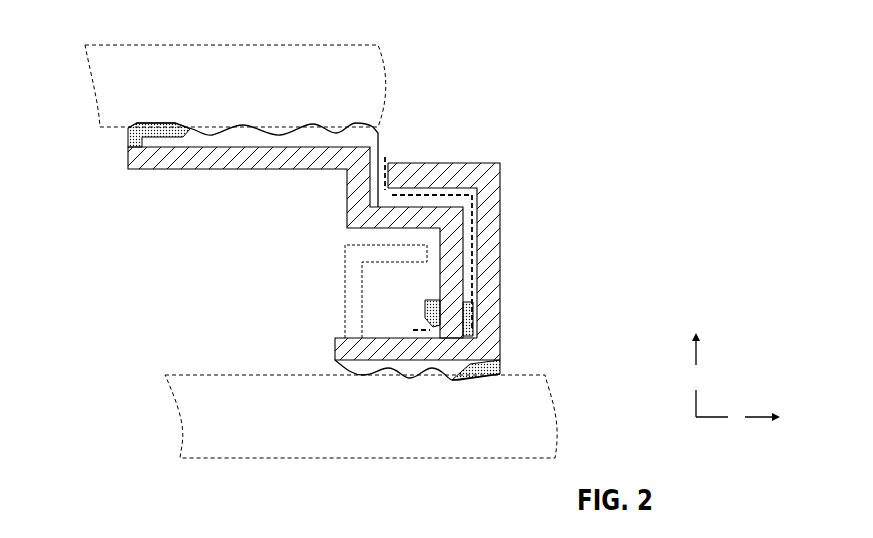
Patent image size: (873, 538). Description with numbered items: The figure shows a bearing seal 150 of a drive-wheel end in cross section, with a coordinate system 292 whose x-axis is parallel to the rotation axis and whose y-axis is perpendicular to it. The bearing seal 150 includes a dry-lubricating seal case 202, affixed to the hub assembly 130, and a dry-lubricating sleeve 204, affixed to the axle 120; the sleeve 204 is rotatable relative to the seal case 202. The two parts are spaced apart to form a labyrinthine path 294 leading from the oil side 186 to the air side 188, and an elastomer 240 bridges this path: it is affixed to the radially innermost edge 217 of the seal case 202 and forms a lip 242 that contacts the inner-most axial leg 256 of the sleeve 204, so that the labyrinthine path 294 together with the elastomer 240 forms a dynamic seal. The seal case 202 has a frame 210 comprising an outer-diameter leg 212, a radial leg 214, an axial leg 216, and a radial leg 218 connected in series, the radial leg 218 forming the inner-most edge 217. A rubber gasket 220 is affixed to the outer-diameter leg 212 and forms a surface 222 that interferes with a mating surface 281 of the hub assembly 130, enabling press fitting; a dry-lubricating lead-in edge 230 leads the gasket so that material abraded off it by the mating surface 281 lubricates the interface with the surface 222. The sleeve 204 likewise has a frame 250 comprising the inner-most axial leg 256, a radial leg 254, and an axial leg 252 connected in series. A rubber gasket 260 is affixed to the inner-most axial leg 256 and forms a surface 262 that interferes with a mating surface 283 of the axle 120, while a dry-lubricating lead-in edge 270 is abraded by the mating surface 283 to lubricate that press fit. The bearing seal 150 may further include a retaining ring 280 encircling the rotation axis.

The axle 120 is at (554, 448).
The hub assembly 130 is at (125, 78).
The bearing seal 150 is at (598, 101).
The oil side 186 is at (260, 301).
The air side 188 is at (620, 295).
The seal case 202 is at (102, 157).
The sleeve 204 is at (322, 353).
The frame 210 is at (152, 181).
The outer-diameter leg 212 is at (238, 169).
The radial leg 214 is at (347, 194).
The axial leg 216 is at (392, 235).
The radially innermost edge 217 is at (455, 329).
The radial leg 218 is at (440, 267).
The rubber gasket 220 is at (252, 127).
The surface 222 is at (314, 127).
The dry-lubricating lead-in edge 230 is at (157, 140).
The elastomer 240 is at (425, 310).
The lip 242 is at (448, 340).
The frame 250 is at (484, 152).
The axial leg 252 is at (447, 162).
The radial leg 254 is at (499, 237).
The inner-most axial leg 256 is at (373, 338).
The rubber gasket 260 is at (418, 370).
The surface 262 is at (379, 374).
The dry-lubricating lead-in edge 270 is at (474, 381).
The retaining ring 280 is at (345, 262).
The mating surface 281 is at (123, 127).
The mating surface 283 is at (509, 371).
The coordinate system 292 is at (761, 439).
The labyrinthine path 294 is at (473, 267).